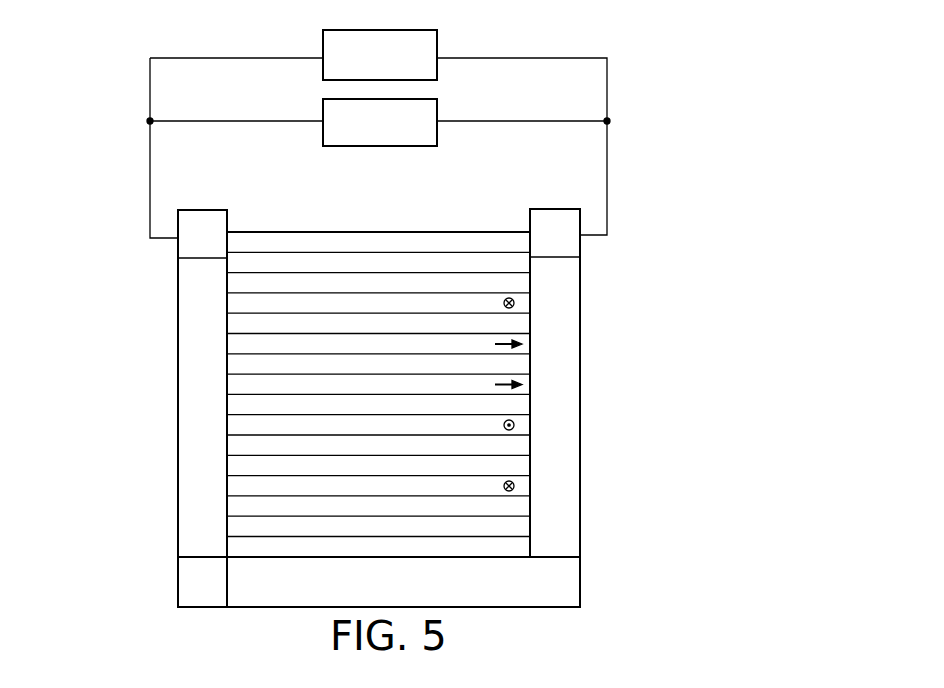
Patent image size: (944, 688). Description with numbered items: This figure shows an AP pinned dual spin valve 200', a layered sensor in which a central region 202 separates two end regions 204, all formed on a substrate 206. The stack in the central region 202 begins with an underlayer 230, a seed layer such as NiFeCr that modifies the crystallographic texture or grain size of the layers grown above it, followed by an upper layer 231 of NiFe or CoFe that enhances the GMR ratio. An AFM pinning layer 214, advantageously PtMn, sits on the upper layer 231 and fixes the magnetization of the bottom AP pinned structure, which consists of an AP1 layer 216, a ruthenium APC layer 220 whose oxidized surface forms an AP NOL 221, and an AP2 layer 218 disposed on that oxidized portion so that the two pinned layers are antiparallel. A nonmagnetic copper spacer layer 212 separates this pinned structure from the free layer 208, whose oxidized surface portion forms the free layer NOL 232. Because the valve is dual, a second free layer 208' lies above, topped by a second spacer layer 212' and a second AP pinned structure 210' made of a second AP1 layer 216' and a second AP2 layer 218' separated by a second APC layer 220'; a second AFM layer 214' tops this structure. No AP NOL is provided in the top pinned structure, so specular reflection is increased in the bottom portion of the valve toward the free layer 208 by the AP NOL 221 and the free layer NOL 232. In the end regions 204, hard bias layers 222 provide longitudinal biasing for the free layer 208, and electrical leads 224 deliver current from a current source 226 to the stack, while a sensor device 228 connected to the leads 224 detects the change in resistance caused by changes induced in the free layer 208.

The AP pinned dual spin valve 200' is at (95, 197).
The central region 202 is at (232, 209).
The end regions 204 is at (227, 209).
The substrate 206 is at (187, 583).
The free layer 208 is at (430, 397).
The second free layer 208' is at (433, 356).
The second AP pinned structure 210' is at (178, 373).
The spacer layer 212 is at (430, 419).
The second spacer layer 212' is at (433, 335).
The AFM pinning layer 214 is at (334, 504).
The second AFM layer 214' is at (378, 230).
The AP1 layer 216 is at (430, 505).
The second AP1 layer 216' is at (433, 314).
The AP2 layer 218 is at (430, 441).
The second AP2 layer 218' is at (433, 272).
The APC layer 220 is at (430, 483).
The second APC layer 220' is at (433, 293).
The AP NOL 221 is at (530, 473).
The hard bias layers 222 is at (183, 278).
The electrical leads 224 is at (185, 252).
The current source 226 is at (437, 108).
The sensor device 228 is at (437, 37).
The underlayer 230 is at (234, 547).
The upper layer 231 is at (234, 527).
The free layer NOL 232 is at (530, 368).